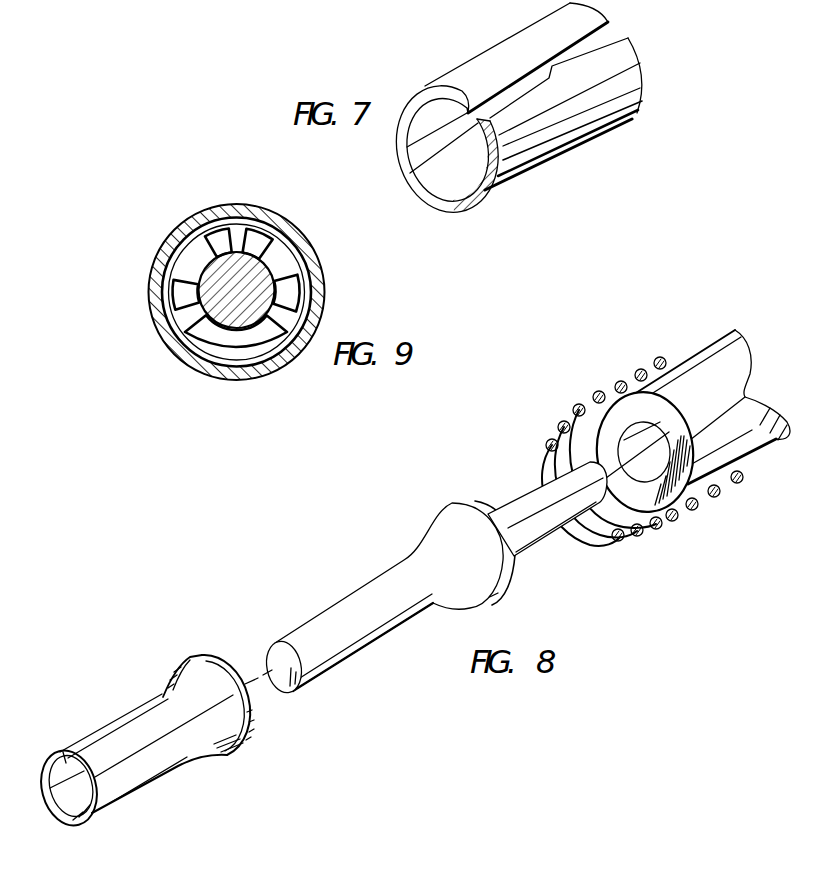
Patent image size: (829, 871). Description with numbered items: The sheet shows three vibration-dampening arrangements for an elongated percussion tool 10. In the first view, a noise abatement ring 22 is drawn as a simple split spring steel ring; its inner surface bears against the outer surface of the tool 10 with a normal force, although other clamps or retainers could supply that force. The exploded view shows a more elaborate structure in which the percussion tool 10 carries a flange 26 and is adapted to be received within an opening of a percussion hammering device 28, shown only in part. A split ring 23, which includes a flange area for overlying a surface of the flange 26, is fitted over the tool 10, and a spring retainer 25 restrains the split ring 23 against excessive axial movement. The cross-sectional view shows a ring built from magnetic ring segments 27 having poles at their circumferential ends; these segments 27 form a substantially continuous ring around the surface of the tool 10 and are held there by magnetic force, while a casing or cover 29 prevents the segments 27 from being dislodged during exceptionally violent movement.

In FIG. 9, the percussion tool 10 is at (279, 279).
In FIG. 8, the percussion tool 10 is at (505, 447).
In FIG. 7, the ring 22 is at (443, 80).
In FIG. 8, the split ring 23 is at (166, 672).
In FIG. 8, the spring retainer 25 is at (577, 418).
In FIG. 8, the flange 26 is at (436, 533).
In FIG. 9, the ring segments 27 is at (203, 250).
In FIG. 8, the percussion hammering device 28 is at (693, 366).
In FIG. 9, the casing or cover 29 is at (183, 355).